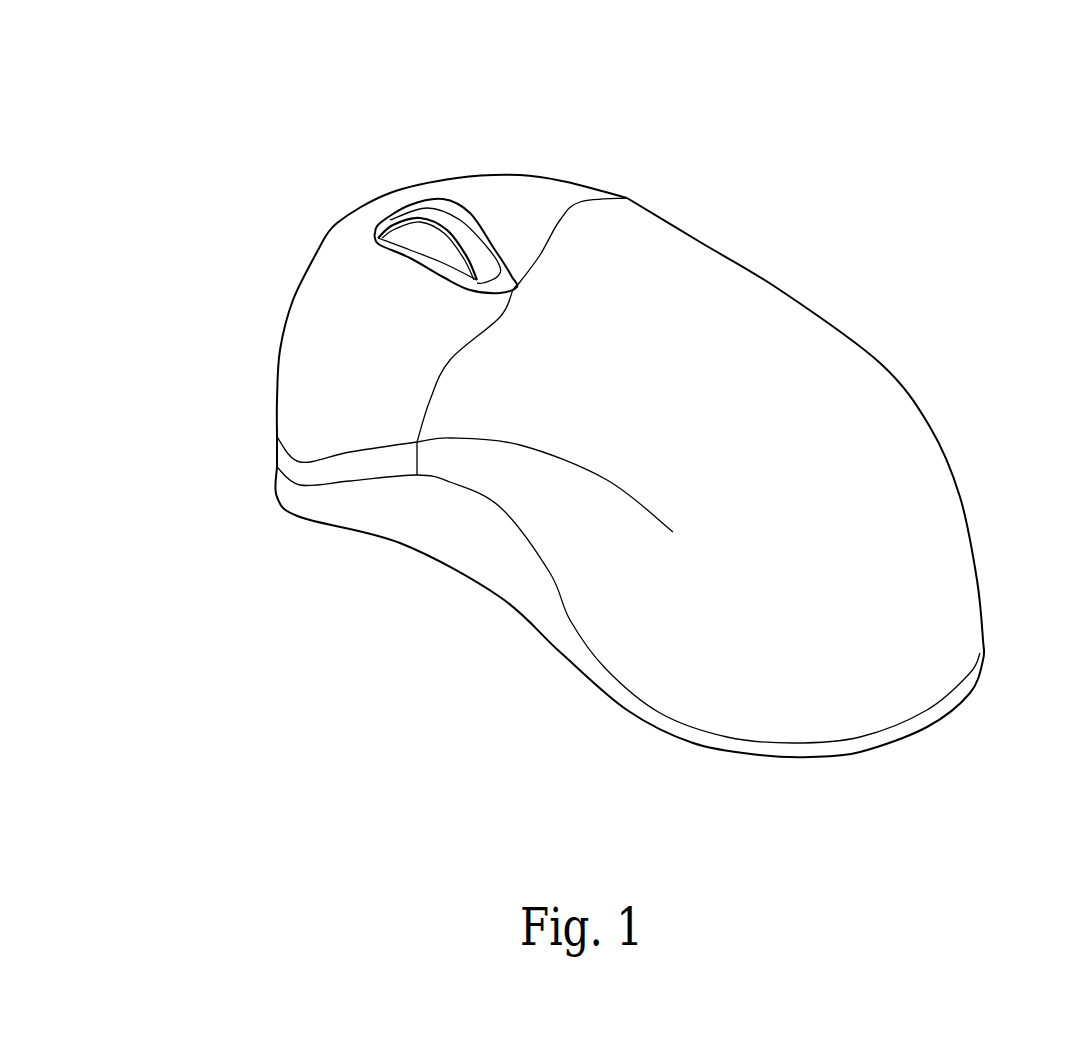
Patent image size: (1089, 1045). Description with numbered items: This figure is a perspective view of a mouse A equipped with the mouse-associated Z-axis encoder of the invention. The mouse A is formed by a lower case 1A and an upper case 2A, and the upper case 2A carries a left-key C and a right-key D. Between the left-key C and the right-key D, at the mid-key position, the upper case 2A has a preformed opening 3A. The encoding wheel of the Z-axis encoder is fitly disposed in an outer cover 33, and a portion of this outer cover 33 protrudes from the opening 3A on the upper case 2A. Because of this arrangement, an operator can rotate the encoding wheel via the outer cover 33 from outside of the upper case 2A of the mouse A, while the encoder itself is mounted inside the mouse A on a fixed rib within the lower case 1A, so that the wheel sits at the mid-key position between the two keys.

The mouse A is at (828, 297).
The lower case 1A is at (448, 535).
The upper case 2A is at (903, 455).
The left-key C is at (317, 374).
The right-key D is at (533, 205).
The opening 3A is at (420, 235).
The outer cover 33 is at (445, 217).